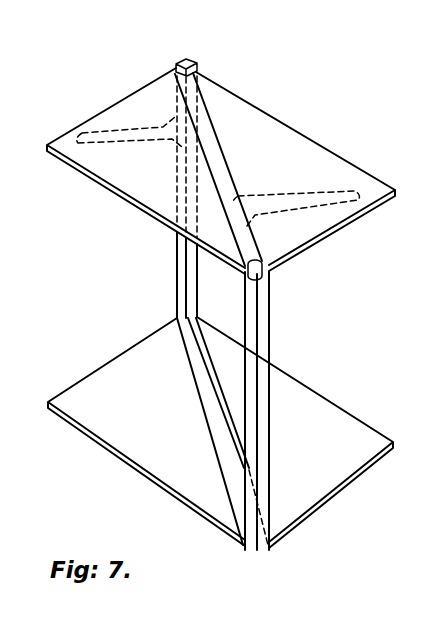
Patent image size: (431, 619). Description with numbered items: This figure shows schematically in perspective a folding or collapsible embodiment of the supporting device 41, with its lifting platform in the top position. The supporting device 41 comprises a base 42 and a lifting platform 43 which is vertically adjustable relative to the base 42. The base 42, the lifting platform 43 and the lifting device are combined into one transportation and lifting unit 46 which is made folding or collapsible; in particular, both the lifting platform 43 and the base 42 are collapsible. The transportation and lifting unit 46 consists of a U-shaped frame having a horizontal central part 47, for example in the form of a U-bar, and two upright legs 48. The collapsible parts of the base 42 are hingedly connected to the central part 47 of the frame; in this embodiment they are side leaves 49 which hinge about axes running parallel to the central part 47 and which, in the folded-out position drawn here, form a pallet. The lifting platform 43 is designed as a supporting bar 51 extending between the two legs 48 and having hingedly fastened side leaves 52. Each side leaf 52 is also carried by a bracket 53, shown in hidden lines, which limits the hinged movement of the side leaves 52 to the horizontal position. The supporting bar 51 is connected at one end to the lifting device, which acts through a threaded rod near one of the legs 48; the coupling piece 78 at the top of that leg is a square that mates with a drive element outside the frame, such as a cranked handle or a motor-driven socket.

The supporting device 41 is at (338, 125).
The base 42 is at (86, 353).
The lifting platform 43 is at (232, 128).
The transportation and lifting unit 46 is at (105, 240).
The central part 47 is at (210, 401).
The upright legs 48 is at (194, 60).
The side leaves 49 is at (159, 380).
The supporting bar 51 is at (224, 165).
The side leaves 52 is at (156, 176).
The bracket 53 is at (103, 137).
The coupling piece 78 is at (262, 261).